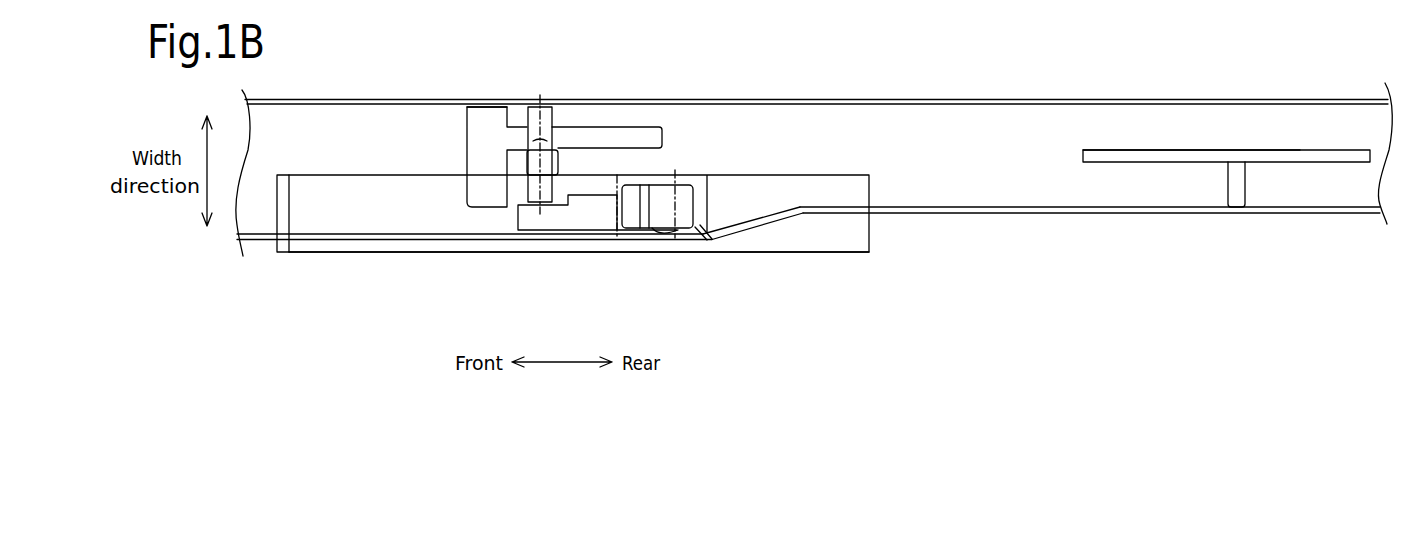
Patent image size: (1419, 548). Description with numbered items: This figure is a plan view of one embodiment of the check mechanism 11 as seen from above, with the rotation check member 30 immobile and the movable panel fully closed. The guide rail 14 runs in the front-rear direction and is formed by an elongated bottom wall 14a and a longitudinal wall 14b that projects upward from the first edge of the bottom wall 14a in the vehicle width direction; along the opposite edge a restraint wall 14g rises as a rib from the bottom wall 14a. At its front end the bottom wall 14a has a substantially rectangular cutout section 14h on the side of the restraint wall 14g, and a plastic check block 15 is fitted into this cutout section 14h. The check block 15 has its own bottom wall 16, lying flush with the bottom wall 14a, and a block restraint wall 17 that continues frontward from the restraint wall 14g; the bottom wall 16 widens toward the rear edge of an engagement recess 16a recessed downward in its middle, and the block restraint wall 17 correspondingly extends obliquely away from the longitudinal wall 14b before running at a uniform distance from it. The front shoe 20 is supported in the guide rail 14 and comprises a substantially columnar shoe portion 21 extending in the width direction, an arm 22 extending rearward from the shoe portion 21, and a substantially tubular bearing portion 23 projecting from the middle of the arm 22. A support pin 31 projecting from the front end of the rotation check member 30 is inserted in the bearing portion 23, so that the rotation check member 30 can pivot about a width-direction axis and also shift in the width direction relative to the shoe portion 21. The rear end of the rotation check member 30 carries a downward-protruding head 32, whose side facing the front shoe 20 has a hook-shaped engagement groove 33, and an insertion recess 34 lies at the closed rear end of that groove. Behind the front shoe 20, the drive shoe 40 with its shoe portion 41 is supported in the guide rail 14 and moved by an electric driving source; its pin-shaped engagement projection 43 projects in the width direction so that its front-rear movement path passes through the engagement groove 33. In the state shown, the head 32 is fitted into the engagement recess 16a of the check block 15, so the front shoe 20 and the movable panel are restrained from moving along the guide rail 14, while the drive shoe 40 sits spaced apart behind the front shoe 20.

The vehicle seat slide device 11 is at (851, 49).
The guide rail 14 is at (774, 99).
The bottom wall 14a is at (975, 200).
The longitudinal wall 14b is at (913, 99).
The restraint wall 14g is at (1030, 215).
The cutout section 14h is at (822, 177).
The check block 15 is at (545, 253).
The bottom wall 16 is at (311, 228).
The engagement recess 16a is at (698, 243).
The block restraint wall 17 is at (775, 225).
The front shoe 20 is at (466, 141).
The shoe portion 21 is at (487, 112).
The arm 22 is at (623, 125).
The bearing portion 23 is at (552, 107).
The rotation check member 30 is at (590, 228).
The support pin 31 is at (532, 188).
The head 32 is at (640, 233).
The engagement groove 33 is at (647, 186).
The insertion recess 34 is at (663, 238).
The drive shoe 40 is at (1323, 150).
The shoe portion 41 is at (1262, 150).
The engagement projection 43 is at (1248, 183).